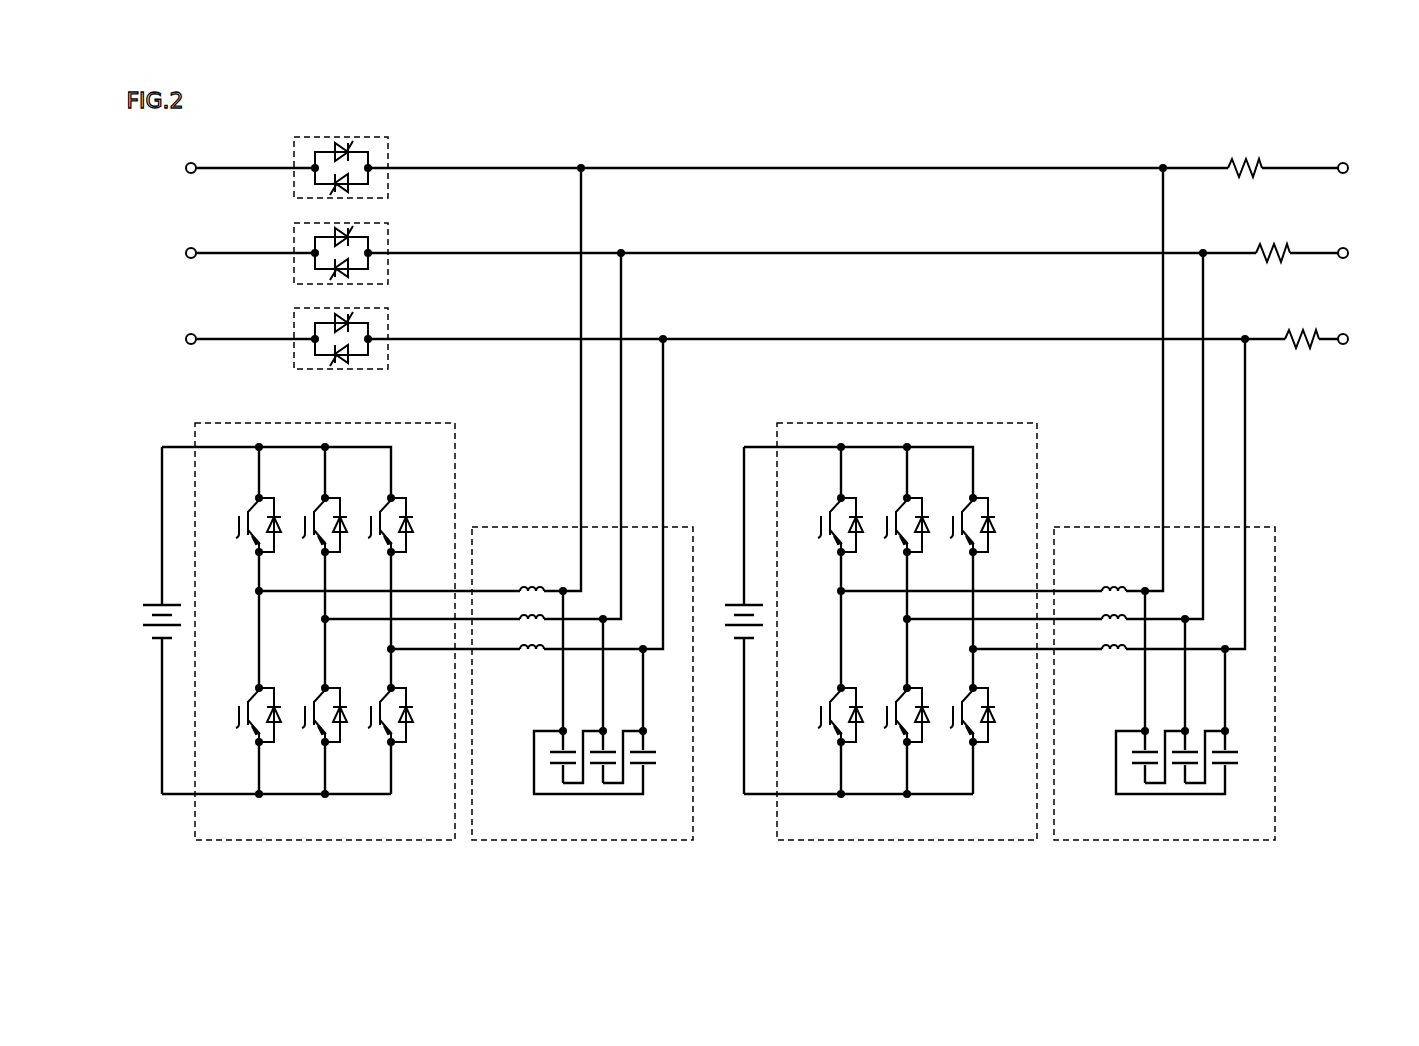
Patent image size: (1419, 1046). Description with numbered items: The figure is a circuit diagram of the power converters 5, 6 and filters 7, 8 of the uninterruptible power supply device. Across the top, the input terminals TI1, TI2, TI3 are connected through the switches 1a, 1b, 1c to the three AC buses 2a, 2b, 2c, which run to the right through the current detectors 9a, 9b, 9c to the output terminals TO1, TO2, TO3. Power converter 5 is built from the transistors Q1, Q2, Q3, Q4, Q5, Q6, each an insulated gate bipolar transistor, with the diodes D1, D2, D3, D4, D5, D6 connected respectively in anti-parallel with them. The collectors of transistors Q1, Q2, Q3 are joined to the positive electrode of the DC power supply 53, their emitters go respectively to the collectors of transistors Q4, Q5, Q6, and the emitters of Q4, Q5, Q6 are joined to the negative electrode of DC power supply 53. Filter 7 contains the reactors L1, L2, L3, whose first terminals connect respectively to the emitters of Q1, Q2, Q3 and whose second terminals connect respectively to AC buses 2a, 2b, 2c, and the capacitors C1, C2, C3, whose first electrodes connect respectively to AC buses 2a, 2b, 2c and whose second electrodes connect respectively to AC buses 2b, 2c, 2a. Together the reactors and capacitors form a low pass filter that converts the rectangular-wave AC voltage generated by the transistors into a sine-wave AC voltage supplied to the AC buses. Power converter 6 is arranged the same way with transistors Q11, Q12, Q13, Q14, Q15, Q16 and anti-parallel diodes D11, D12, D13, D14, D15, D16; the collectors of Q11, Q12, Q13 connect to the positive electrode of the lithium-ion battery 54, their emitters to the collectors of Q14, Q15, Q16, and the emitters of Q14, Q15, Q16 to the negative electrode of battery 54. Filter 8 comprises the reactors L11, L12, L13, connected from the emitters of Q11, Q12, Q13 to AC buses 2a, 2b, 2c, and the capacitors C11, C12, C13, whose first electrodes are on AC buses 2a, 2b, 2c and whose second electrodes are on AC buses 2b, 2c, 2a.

The input terminal TI1 is at (186, 168).
The input terminal TI2 is at (186, 253).
The input terminal TI3 is at (186, 339).
The output terminal TO1 is at (1349, 168).
The output terminal TO2 is at (1349, 253).
The output terminal TO3 is at (1349, 339).
The switch 1a is at (376, 138).
The switch 1b is at (376, 223).
The switch 1c is at (376, 308).
The AC bus 2a is at (749, 167).
The AC bus 2b is at (749, 252).
The AC bus 2c is at (749, 337).
The current detector 9a is at (1257, 162).
The current detector 9b is at (1285, 247).
The current detector 9c is at (1313, 333).
The power converter 5 is at (318, 616).
The power converter 6 is at (900, 616).
The filter 7 is at (484, 504).
The filter 8 is at (1066, 504).
The DC power supply 53 is at (161, 604).
The lithium-ion battery 54 is at (743, 604).
The transistor Q1 is at (238, 511).
The transistor Q2 is at (304, 511).
The transistor Q3 is at (370, 511).
The transistor Q4 is at (238, 701).
The transistor Q5 is at (304, 701).
The transistor Q6 is at (370, 701).
The diode D1 is at (284, 542).
The diode D2 is at (350, 542).
The diode D3 is at (416, 542).
The diode D4 is at (284, 732).
The diode D5 is at (350, 732).
The diode D6 is at (416, 732).
The transistor Q11 is at (817, 511).
The transistor Q12 is at (883, 511).
The transistor Q13 is at (949, 511).
The transistor Q14 is at (817, 701).
The transistor Q15 is at (883, 701).
The transistor Q16 is at (949, 701).
The diode D11 is at (870, 542).
The diode D12 is at (936, 542).
The diode D13 is at (1002, 542).
The diode D14 is at (870, 732).
The diode D15 is at (936, 732).
The diode D16 is at (1002, 732).
The reactor L1 is at (530, 587).
The reactor L2 is at (523, 613).
The reactor L3 is at (532, 655).
The reactor L11 is at (1112, 587).
The reactor L12 is at (1105, 613).
The reactor L13 is at (1114, 655).
The capacitor C1 is at (557, 768).
The capacitor C2 is at (597, 768).
The capacitor C3 is at (647, 768).
The capacitor C11 is at (1139, 768).
The capacitor C12 is at (1179, 768).
The capacitor C13 is at (1229, 768).